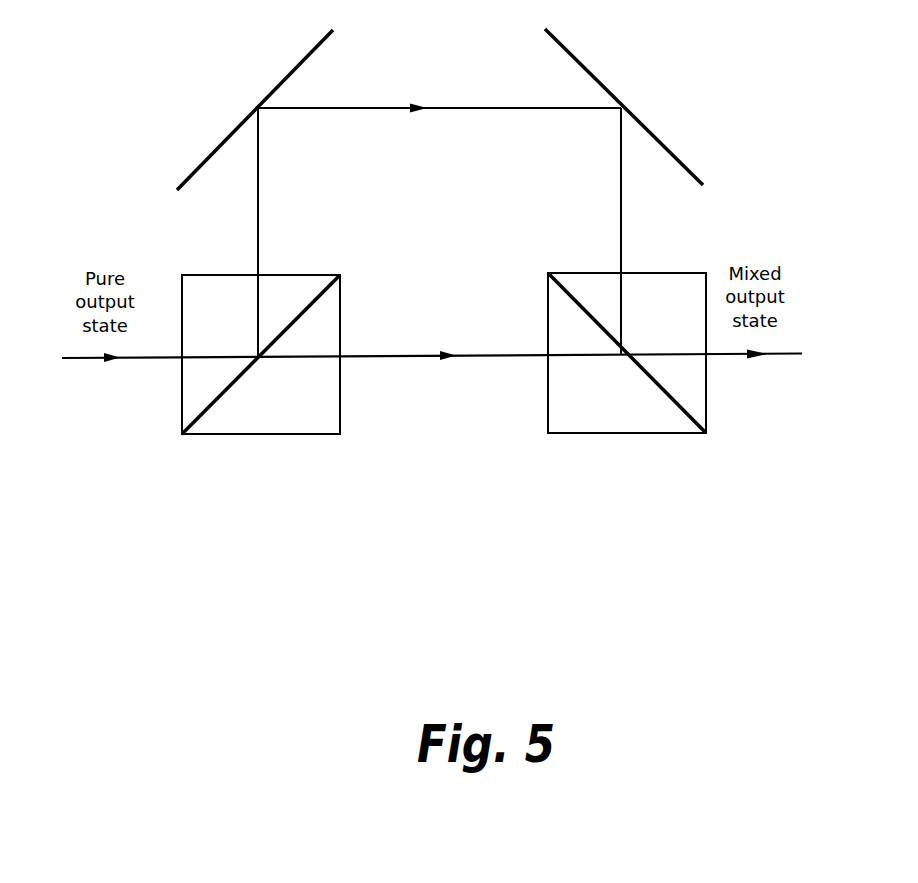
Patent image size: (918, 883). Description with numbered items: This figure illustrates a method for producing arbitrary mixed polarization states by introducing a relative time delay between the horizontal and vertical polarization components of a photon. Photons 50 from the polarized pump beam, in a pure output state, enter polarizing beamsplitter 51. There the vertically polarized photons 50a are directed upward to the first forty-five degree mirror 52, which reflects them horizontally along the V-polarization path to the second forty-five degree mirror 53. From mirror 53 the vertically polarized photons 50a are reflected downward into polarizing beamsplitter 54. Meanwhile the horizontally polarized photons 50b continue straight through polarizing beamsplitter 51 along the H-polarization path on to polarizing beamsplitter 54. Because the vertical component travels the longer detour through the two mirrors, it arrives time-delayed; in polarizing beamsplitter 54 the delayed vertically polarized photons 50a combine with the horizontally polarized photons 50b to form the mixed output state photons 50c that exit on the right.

The photons 50 is at (142, 363).
The vertically polarized photons 50a is at (258, 177).
The horizontally polarized photons 50b is at (387, 350).
The mixed output state photons 50c is at (720, 358).
The polarizing beamsplitter 51 is at (272, 440).
The 45° mirror 52 is at (275, 85).
The 45° mirror 53 is at (607, 83).
The polarizing beamsplitter 54 is at (603, 435).